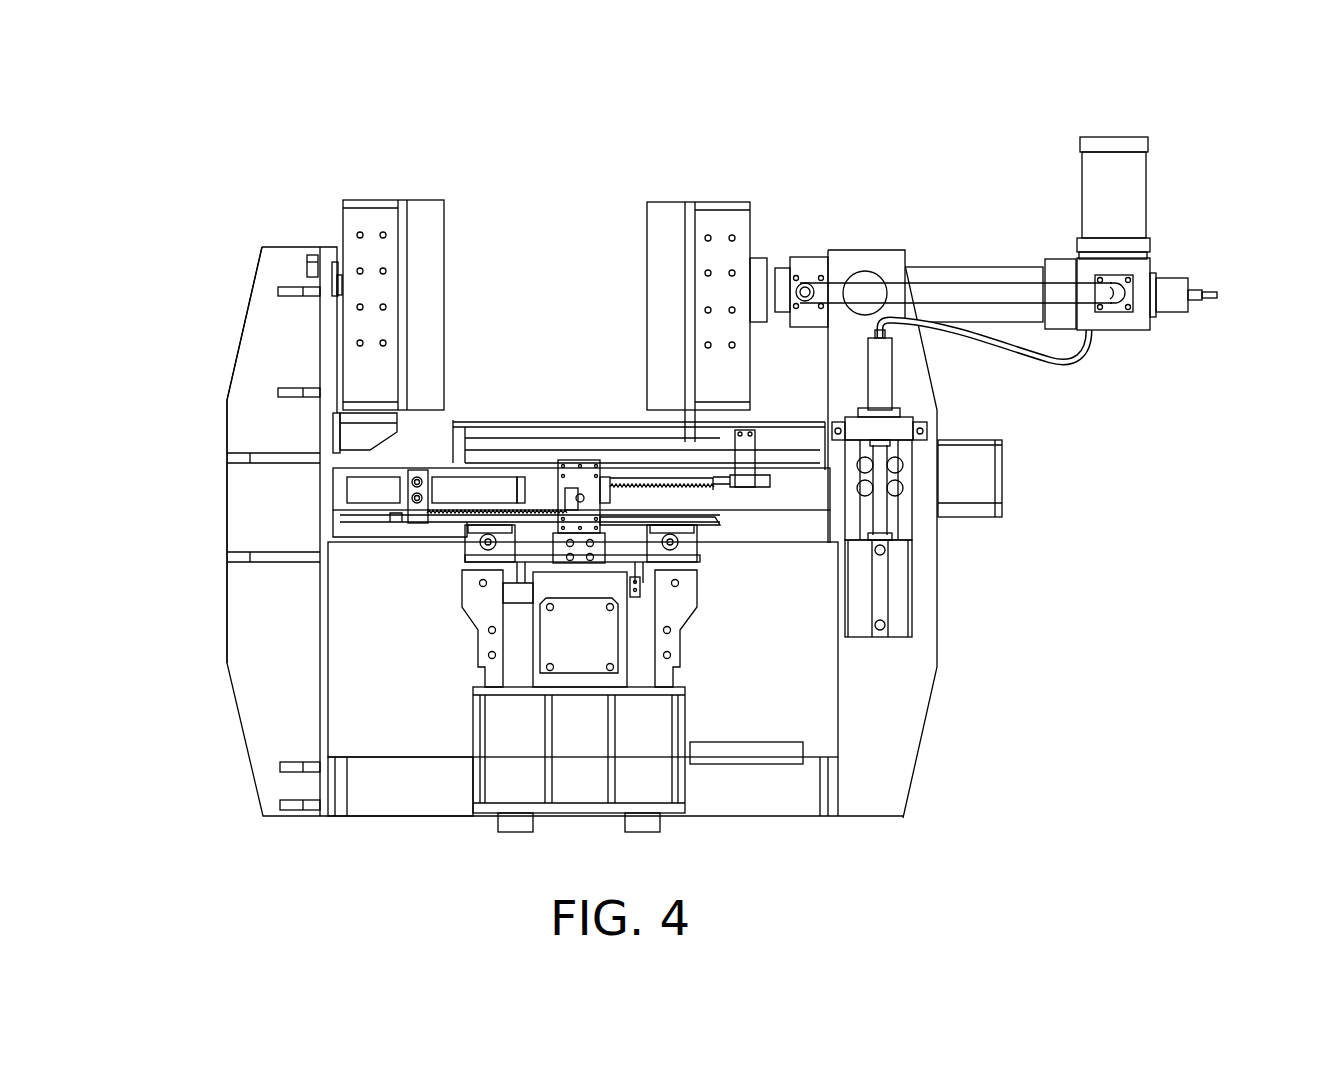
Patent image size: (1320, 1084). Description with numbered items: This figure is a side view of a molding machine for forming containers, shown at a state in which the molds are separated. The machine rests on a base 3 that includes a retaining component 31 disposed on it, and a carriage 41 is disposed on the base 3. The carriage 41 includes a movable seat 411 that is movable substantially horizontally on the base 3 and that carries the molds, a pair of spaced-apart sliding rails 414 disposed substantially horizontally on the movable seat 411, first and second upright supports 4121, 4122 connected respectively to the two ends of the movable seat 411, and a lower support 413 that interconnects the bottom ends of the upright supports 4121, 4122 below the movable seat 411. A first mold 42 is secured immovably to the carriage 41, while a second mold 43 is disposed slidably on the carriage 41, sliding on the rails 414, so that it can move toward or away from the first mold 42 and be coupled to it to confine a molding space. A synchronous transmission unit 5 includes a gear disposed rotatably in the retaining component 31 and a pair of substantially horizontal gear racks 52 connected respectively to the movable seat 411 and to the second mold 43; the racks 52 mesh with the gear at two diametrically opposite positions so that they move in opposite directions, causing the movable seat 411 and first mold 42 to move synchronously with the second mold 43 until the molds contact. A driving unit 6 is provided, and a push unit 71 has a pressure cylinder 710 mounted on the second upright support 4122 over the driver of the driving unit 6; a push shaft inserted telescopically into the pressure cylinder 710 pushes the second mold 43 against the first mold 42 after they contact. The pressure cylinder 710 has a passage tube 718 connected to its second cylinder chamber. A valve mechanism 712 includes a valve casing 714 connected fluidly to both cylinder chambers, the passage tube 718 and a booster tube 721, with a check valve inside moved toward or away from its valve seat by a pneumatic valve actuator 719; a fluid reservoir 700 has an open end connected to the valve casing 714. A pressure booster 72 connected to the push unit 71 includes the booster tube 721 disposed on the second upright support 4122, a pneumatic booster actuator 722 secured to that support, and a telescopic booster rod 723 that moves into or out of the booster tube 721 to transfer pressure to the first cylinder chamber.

The base 3 is at (657, 770).
The retaining component 31 is at (582, 550).
The carriage 41 is at (258, 255).
The movable seat 411 is at (340, 486).
The lower support 413 is at (375, 787).
The sliding rails 414 is at (492, 458).
The first upright support 4121 is at (256, 350).
The second upright support 4122 is at (920, 677).
The first mold 42 is at (427, 207).
The second mold 43 is at (664, 206).
The synchronous transmission unit 5 is at (442, 530).
The gear racks 52 is at (523, 518).
The driving unit 6 is at (1008, 521).
The fluid reservoir 700 is at (1092, 170).
The push unit 71 is at (1073, 212).
The pressure cylinder 710 is at (1008, 266).
The valve mechanism 712 is at (1172, 266).
The valve casing 714 is at (1140, 272).
The passage tube 718 is at (942, 287).
The pneumatic valve actuator 719 is at (1182, 302).
The pressure booster 72 is at (942, 603).
The booster tube 721 is at (883, 367).
The pneumatic booster actuator 722 is at (900, 597).
The booster rod 723 is at (883, 507).